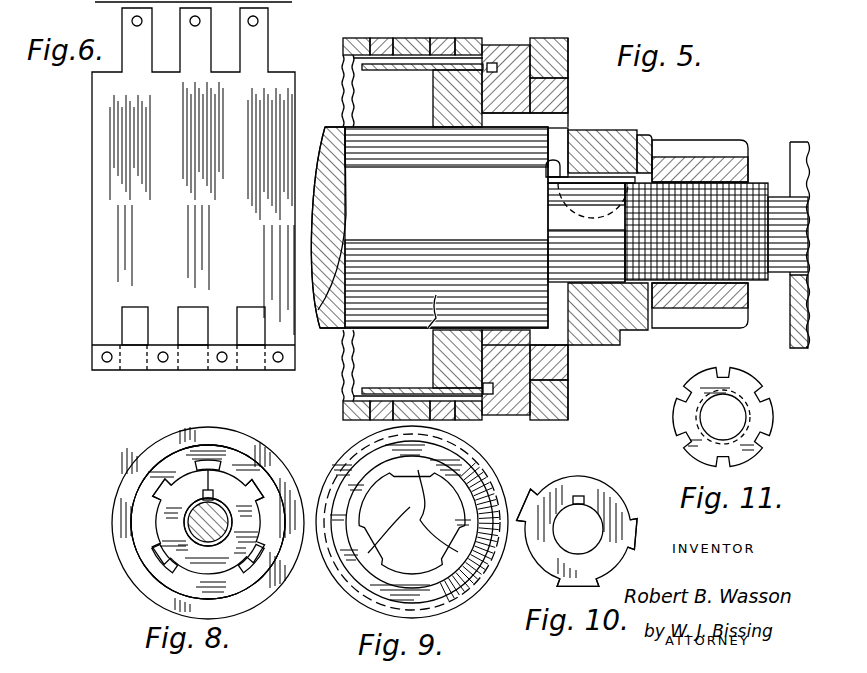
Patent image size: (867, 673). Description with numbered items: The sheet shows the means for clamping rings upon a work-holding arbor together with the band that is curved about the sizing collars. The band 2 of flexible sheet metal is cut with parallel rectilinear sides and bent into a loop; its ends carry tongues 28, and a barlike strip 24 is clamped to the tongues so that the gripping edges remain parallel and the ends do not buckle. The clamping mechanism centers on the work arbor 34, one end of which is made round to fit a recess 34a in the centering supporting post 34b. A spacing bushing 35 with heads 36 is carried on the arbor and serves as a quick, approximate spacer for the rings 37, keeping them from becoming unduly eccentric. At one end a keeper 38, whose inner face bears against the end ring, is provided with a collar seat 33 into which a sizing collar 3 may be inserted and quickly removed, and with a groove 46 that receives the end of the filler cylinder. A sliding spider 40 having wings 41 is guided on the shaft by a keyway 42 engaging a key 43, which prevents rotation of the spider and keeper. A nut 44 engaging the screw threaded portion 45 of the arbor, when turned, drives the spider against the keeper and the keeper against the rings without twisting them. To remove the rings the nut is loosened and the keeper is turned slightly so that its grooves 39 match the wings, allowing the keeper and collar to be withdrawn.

In FIG. 6, the band 2 is at (137, 209).
In FIG. 5, the sizing collar 3 is at (553, 55).
In FIG. 8, the sizing collar 3 is at (183, 440).
In FIG. 6, the strip 24 is at (137, 358).
In FIG. 6, the tongues 28 is at (135, 43).
In FIG. 5, the collar seat 33 is at (572, 92).
In FIG. 8, the collar seat 33 is at (140, 547).
In FIG. 9, the collar seat 33 is at (356, 468).
In FIG. 5, the work arbor 34 is at (438, 300).
In FIG. 8, the work arbor 34 is at (220, 540).
In FIG. 5, the recess 34a is at (800, 145).
In FIG. 5, the centering supporting post 34b is at (790, 295).
In FIG. 5, the spacing bushing 35 is at (385, 80).
In FIG. 5, the heads 36 is at (447, 100).
In FIG. 5, the rings 37 is at (436, 38).
In FIG. 5, the keeper 38 is at (515, 60).
In FIG. 8, the keeper 38 is at (148, 557).
In FIG. 9, the keeper 38 is at (368, 606).
In FIG. 8, the grooves 39 is at (222, 462).
In FIG. 9, the grooves 39 is at (412, 522).
In FIG. 5, the sliding spider 40 is at (618, 136).
In FIG. 8, the sliding spider 40 is at (176, 552).
In FIG. 10, the sliding spider 40 is at (600, 500).
In FIG. 5, the wings 41 is at (616, 345).
In FIG. 8, the wings 41 is at (158, 497).
In FIG. 10, the wings 41 is at (530, 486).
In FIG. 5, the keyway 42 is at (647, 140).
In FIG. 10, the keyway 42 is at (578, 496).
In FIG. 5, the key 43 is at (545, 172).
In FIG. 8, the key 43 is at (210, 462).
In FIG. 5, the nut 44 is at (700, 157).
In FIG. 8, the nut 44 is at (185, 485).
In FIG. 11, the nut 44 is at (750, 460).
In FIG. 5, the screw threaded portion 45 is at (735, 205).
In FIG. 8, the screw threaded portion 45 is at (232, 520).
In FIG. 5, the groove 46 is at (492, 63).